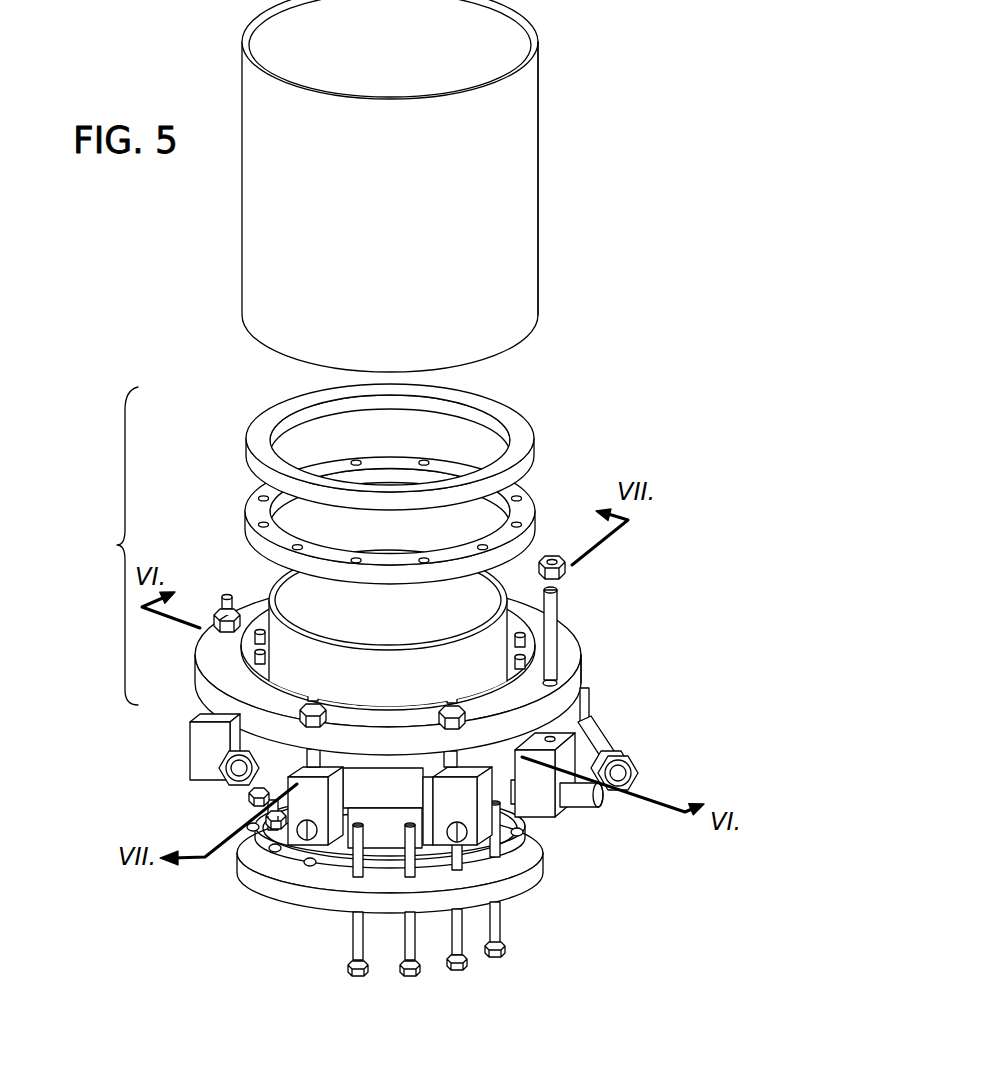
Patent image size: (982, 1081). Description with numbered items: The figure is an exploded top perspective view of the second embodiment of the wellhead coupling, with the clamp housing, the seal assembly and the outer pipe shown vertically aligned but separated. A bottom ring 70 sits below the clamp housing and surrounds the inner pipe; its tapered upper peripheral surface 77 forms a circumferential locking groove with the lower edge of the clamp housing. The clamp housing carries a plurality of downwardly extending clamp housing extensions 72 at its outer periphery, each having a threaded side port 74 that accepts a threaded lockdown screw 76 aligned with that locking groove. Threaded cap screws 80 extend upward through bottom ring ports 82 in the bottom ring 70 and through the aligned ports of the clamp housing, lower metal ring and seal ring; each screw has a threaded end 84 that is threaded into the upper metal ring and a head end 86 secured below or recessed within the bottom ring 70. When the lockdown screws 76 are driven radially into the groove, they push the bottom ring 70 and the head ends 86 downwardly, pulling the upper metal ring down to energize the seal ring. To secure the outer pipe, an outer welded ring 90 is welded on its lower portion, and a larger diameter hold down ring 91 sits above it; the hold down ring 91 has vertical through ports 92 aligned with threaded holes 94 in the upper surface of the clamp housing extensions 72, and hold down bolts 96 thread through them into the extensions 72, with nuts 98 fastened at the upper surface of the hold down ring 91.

The bottom ring 70 is at (525, 870).
The clamp housing extensions 72 is at (516, 808).
The threaded side port 74 is at (538, 792).
The lockdown screw 76 is at (570, 808).
The tapered upper peripheral surface 77 is at (283, 872).
The threaded cap screws 80 is at (500, 910).
The bottom ring ports 82 is at (308, 862).
The threaded end 84 is at (356, 833).
The head end 86 is at (500, 957).
The outer welded ring 90 is at (410, 760).
The hold down ring 91 is at (566, 634).
The vertical through ports 92 is at (580, 690).
The threaded holes 94 is at (590, 722).
The hold down bolts 96 is at (558, 620).
The nuts 98 is at (575, 567).